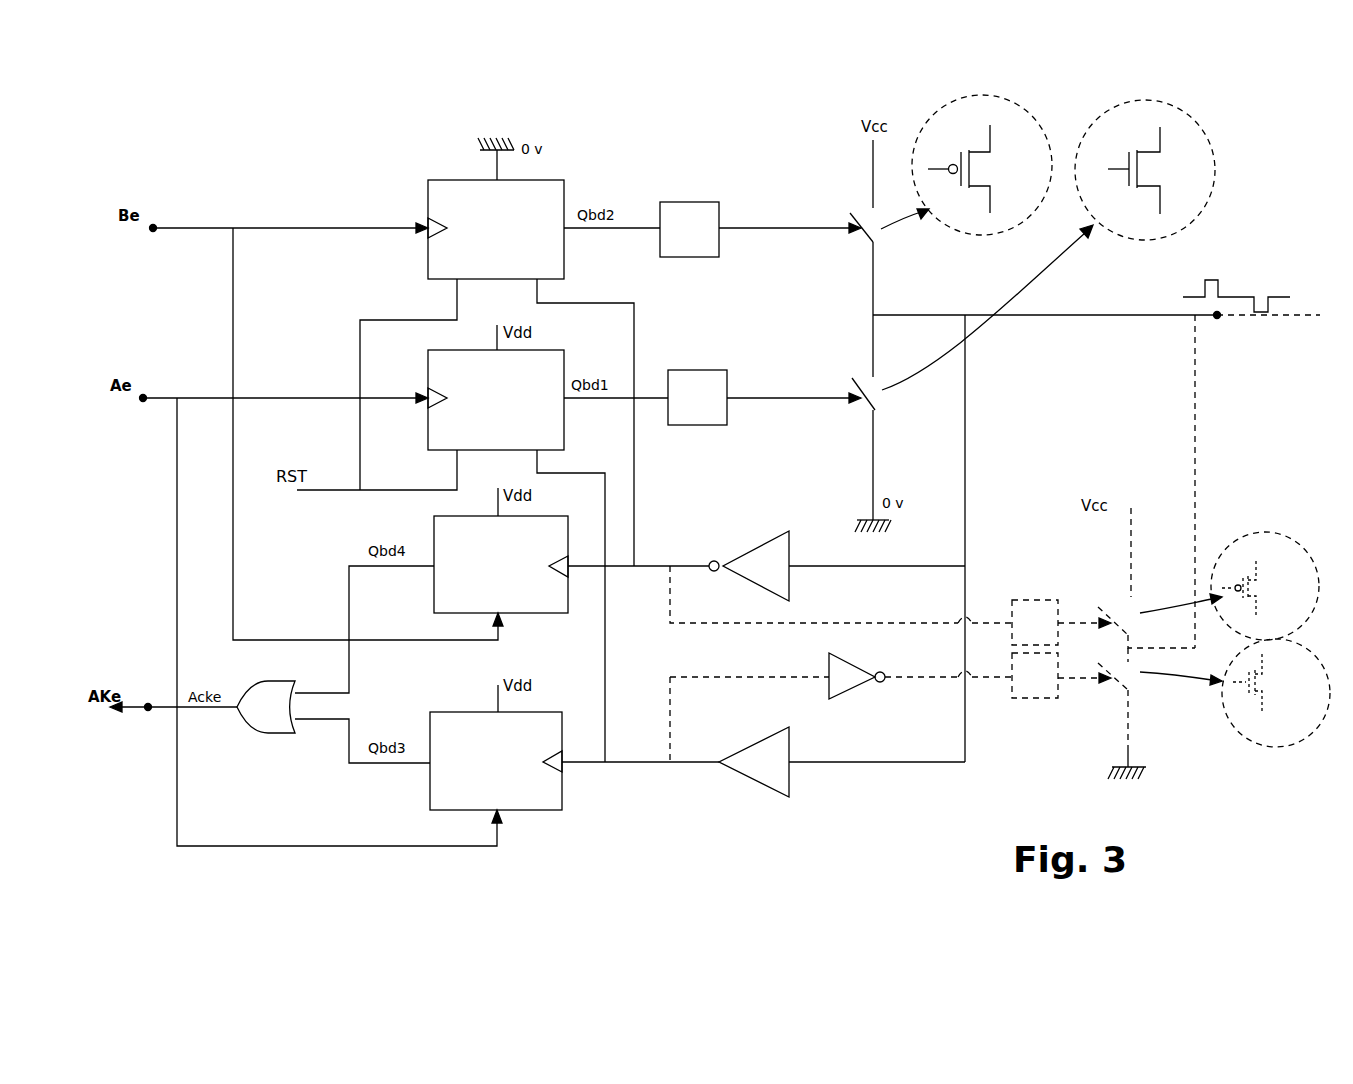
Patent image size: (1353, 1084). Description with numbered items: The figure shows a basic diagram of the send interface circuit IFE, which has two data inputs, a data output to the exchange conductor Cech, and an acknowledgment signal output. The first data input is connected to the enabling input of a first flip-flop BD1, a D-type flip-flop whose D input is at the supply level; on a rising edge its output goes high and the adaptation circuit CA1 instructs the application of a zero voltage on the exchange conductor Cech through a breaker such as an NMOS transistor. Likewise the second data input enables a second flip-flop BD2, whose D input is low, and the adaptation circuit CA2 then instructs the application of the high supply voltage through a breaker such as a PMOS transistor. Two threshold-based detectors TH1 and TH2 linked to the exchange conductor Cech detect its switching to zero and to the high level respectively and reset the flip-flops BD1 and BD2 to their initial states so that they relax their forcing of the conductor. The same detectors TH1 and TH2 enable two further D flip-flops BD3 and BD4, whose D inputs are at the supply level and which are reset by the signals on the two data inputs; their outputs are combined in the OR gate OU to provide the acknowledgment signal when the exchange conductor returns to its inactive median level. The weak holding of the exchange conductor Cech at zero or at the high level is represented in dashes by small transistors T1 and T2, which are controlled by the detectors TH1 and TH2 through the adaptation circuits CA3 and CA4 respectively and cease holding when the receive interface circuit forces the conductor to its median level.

The first flip-flop BD1 is at (496, 400).
The second flip-flop BD2 is at (496, 229).
The flip-flop BD3 is at (496, 761).
The flip-flop BD4 is at (501, 564).
The adaptation circuit CA1 is at (719, 394).
The adaptation circuit CA2 is at (711, 226).
The adaptation circuit CA3 is at (1035, 689).
The adaptation circuit CA4 is at (1034, 611).
The threshold-based detector TH1 is at (816, 740).
The threshold-based detector TH2 is at (816, 546).
The transistor T1 is at (1276, 693).
The transistor T2 is at (1265, 586).
The OR gate OU is at (256, 717).
The exchange conductor Cech is at (1236, 319).
The send interface circuit IFE is at (1229, 802).